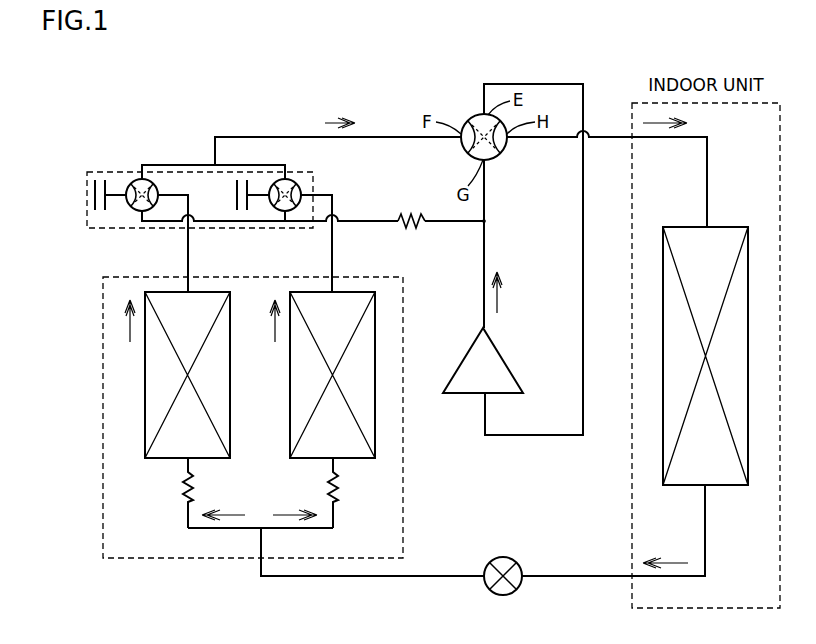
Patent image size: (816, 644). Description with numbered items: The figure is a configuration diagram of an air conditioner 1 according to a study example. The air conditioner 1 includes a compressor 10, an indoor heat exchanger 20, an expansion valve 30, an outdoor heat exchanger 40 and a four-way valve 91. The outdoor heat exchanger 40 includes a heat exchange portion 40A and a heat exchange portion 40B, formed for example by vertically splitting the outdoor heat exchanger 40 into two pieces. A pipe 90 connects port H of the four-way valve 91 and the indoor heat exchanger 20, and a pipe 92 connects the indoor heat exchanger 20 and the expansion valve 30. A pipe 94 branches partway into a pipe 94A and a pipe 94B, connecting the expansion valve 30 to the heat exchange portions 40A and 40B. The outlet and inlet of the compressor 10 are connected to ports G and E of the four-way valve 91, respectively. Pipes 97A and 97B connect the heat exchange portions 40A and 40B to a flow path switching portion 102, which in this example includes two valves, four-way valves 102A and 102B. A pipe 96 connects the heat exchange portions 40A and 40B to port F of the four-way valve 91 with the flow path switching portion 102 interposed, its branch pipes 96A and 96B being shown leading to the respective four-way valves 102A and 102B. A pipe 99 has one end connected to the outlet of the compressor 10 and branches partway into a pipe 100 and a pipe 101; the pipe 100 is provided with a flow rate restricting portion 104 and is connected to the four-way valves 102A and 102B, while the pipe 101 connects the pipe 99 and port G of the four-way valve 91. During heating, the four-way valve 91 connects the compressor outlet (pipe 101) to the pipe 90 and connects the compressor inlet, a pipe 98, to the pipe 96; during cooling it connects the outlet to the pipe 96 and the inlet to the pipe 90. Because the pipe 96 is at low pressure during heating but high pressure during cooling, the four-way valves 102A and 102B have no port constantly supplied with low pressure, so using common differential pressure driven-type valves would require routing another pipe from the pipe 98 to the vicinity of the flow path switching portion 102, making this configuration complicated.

The air conditioner 1 is at (149, 65).
The compressor 10 is at (506, 361).
The indoor heat exchanger 20 is at (730, 227).
The expansion valve 30 is at (503, 595).
The outdoor heat exchanger 40 is at (135, 558).
The heat exchange portion 40A is at (157, 460).
The heat exchange portion 40B is at (362, 460).
The pipe 90 is at (558, 139).
The four-way valve 91 is at (468, 121).
The pipe 92 is at (584, 576).
The pipe 94 is at (388, 578).
The pipe 94A is at (210, 530).
The pipe 94B is at (292, 530).
The pipe 96 is at (246, 136).
The first branch pipe to switching valve 96A is at (162, 165).
The second branch pipe to switching valve 96B is at (271, 165).
The pipe 97A is at (188, 255).
The pipe 97B is at (332, 255).
The pipe 98 is at (533, 84).
The pipe 99 is at (484, 255).
The pipe 100 is at (362, 220).
The pipe 101 is at (485, 200).
The flow path switching portion 102 is at (103, 171).
The four-way valve 102A is at (126, 205).
The four-way valve 102B is at (260, 207).
The flow rate restricting portion 104 is at (408, 230).